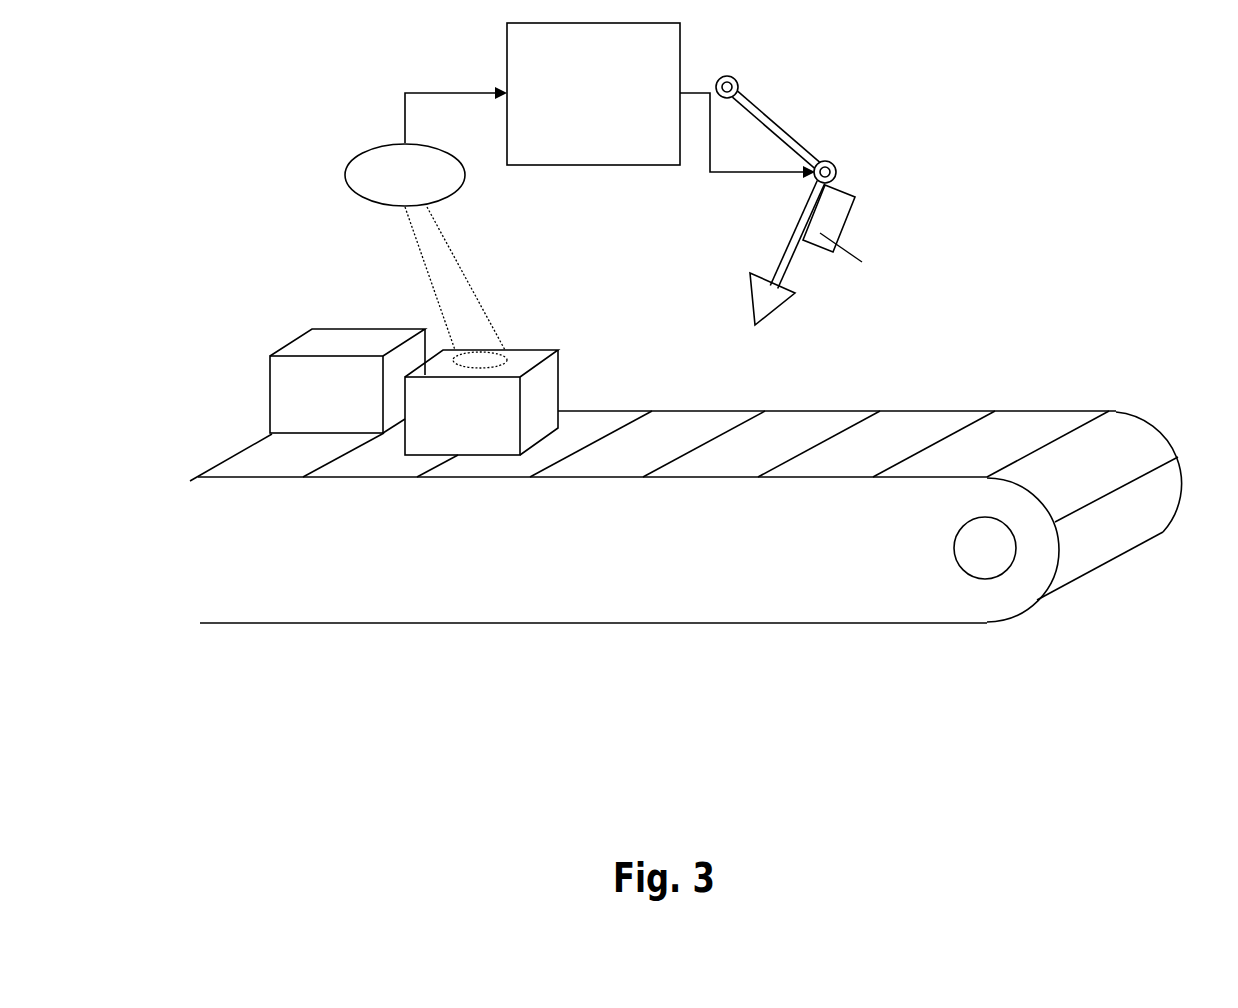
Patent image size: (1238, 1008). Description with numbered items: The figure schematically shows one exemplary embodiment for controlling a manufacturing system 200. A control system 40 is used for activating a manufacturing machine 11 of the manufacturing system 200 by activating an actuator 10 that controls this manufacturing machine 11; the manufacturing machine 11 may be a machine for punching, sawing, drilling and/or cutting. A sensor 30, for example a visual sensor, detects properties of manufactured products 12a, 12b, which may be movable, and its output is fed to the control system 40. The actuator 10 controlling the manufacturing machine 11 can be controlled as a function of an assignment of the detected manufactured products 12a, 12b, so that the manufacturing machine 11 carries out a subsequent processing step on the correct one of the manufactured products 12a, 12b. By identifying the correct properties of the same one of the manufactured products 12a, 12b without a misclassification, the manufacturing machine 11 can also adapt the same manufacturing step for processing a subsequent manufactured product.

The control system 40 is at (490, 30).
The sensor 30 is at (345, 177).
The manufacturing machine 11 is at (793, 138).
The actuator 10 is at (852, 215).
The manufacturing system 200 is at (580, 626).
The manufactured product 12b is at (290, 343).
The manufactured product 12a is at (567, 382).